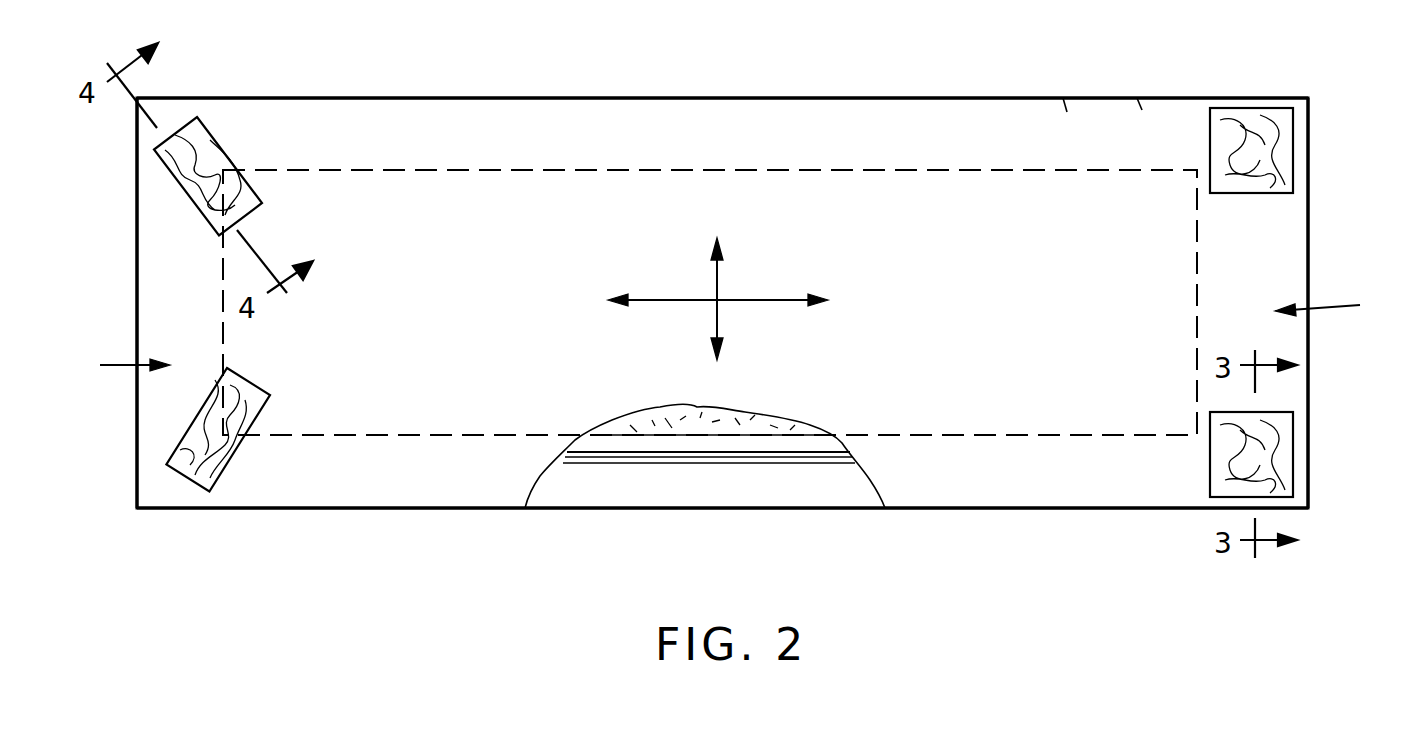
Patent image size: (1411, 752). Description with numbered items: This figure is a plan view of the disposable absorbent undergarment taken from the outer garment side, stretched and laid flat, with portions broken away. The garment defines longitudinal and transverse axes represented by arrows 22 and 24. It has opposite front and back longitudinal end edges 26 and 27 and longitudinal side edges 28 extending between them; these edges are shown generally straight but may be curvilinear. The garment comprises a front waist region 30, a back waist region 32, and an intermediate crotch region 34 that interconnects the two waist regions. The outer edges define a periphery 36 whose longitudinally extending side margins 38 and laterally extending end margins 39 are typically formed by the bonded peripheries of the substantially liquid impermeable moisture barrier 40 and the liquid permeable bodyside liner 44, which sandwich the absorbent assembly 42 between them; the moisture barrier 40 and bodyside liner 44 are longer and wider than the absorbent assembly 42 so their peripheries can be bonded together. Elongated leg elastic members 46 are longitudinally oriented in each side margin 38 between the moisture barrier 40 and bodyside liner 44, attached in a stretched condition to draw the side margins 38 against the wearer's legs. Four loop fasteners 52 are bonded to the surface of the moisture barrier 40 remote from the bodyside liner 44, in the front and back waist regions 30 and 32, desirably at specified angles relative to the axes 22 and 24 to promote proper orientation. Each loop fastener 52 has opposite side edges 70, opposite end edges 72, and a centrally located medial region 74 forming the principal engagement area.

The longitudinal axis arrow 22 is at (668, 298).
The transverse axis arrow 24 is at (719, 318).
The front longitudinal end edge 26 is at (137, 272).
The back longitudinal end edge 27 is at (1308, 218).
The longitudinal side edges 28 is at (770, 98).
The front waist region 30 is at (100, 365).
The back waist region 32 is at (1290, 310).
The crotch region 34 is at (908, 120).
The periphery 36 is at (1068, 113).
The side margins 38 is at (1143, 111).
The end margins 39 is at (152, 322).
The moisture barrier 40 is at (405, 312).
The absorbent assembly 42 is at (652, 430).
The bodyside liner 44 is at (545, 510).
The leg elastic members 46 is at (755, 452).
The loop fasteners 52 is at (180, 130).
The side edges 70 is at (185, 433).
The end edges 72 is at (250, 208).
The medial region 74 is at (172, 178).